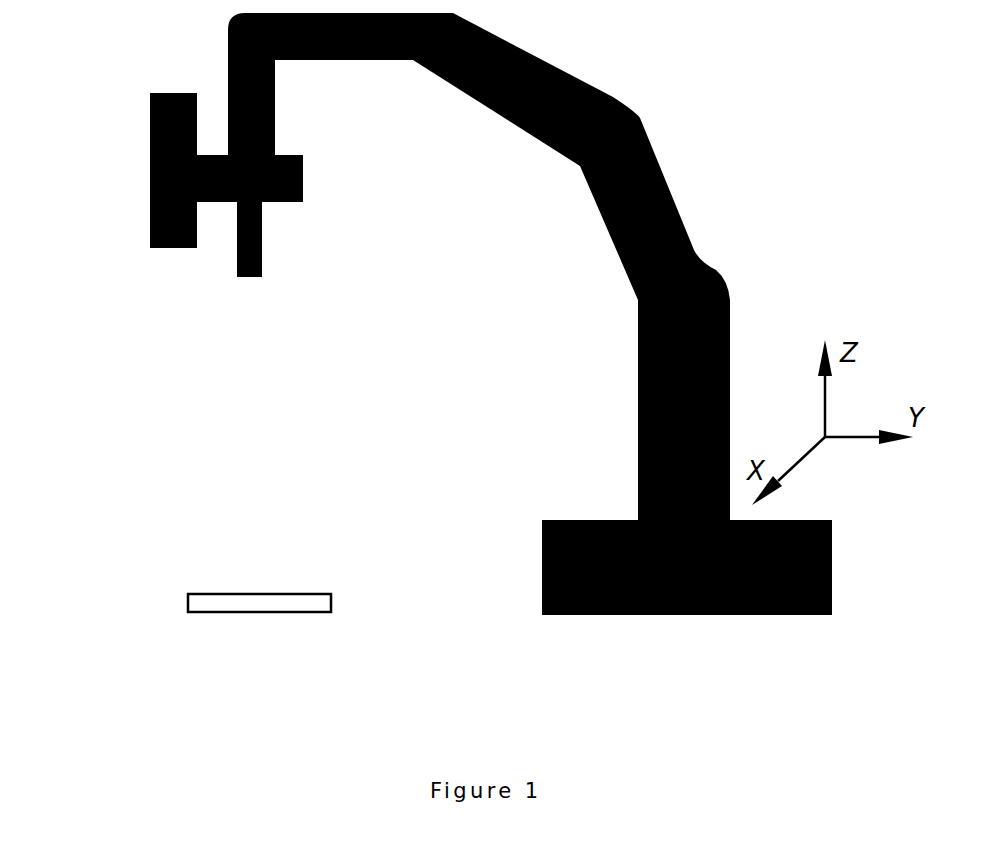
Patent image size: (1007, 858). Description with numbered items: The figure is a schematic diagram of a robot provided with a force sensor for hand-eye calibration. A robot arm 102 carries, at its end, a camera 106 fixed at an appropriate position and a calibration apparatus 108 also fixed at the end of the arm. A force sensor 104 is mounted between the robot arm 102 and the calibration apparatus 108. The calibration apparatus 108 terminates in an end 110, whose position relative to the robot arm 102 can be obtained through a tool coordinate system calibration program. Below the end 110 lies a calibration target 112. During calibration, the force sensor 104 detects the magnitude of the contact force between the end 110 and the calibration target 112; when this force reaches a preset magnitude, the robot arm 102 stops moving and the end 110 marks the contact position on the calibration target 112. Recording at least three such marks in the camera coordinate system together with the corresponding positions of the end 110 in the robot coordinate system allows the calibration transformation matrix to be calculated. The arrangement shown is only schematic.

The robot arm 102 is at (638, 353).
The force sensor 104 is at (295, 153).
The camera 106 is at (148, 110).
The calibration apparatus 108 is at (265, 230).
The end of the calibration apparatus 110 is at (242, 278).
The calibration target 112 is at (255, 590).